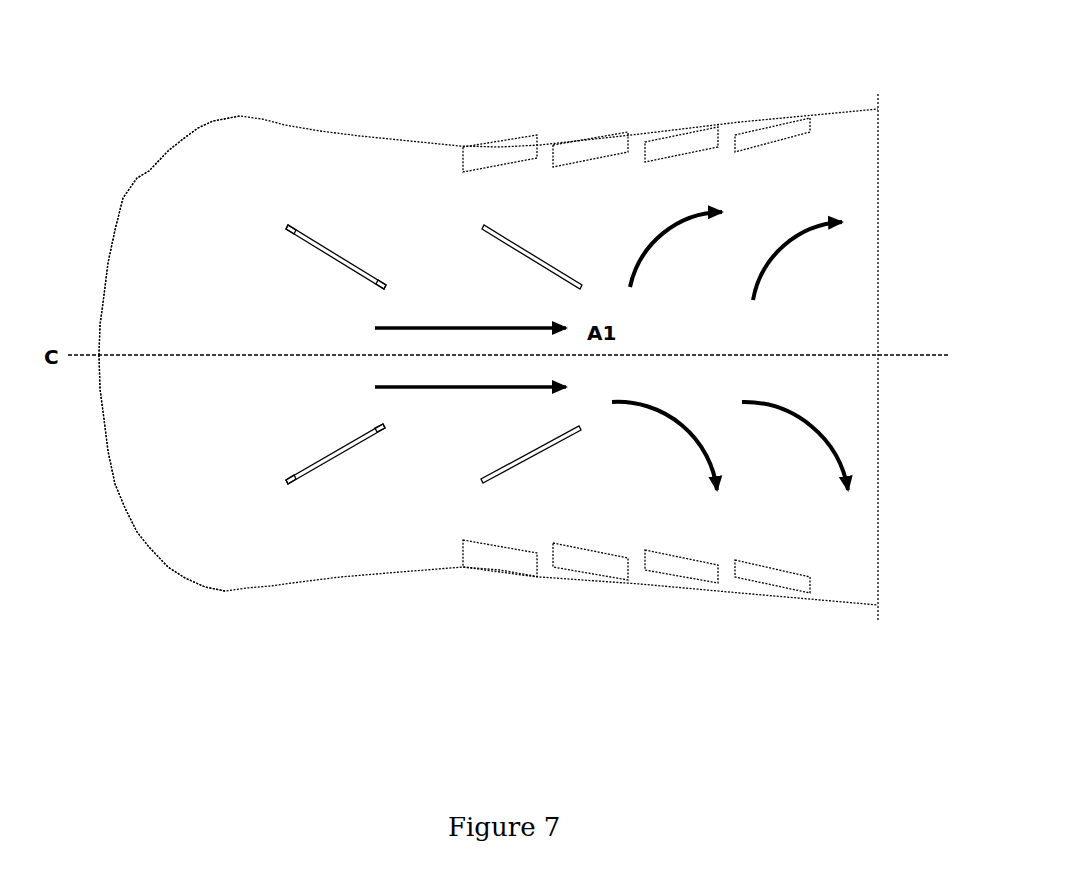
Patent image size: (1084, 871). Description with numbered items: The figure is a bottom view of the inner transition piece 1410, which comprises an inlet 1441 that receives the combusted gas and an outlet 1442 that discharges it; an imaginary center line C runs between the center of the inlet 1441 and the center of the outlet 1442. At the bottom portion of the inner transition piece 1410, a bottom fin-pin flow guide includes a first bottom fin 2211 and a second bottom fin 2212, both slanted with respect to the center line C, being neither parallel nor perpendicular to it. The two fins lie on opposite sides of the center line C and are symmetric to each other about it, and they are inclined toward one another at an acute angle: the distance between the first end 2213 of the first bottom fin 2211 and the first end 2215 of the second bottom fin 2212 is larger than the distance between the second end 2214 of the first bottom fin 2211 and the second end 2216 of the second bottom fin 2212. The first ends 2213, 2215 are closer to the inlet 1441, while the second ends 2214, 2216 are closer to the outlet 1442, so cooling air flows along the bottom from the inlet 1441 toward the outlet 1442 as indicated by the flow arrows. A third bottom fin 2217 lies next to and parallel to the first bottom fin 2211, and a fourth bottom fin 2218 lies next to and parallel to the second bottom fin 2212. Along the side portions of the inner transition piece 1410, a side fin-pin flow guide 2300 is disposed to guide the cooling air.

The inner transition piece 1410 is at (118, 72).
The inlet 1441 is at (122, 189).
The outlet 1442 is at (914, 422).
The first bottom fin 2211 is at (342, 463).
The second bottom fin 2212 is at (341, 252).
The first end of the first bottom fin 2213 is at (288, 494).
The second end of the first bottom fin 2214 is at (386, 435).
The first end of the second bottom fin 2215 is at (291, 218).
The second end of the second bottom fin 2216 is at (389, 267).
The third bottom fin 2217 is at (480, 492).
The fourth bottom fin 2218 is at (484, 220).
The side fin-pin flow guide 2300 is at (748, 136).